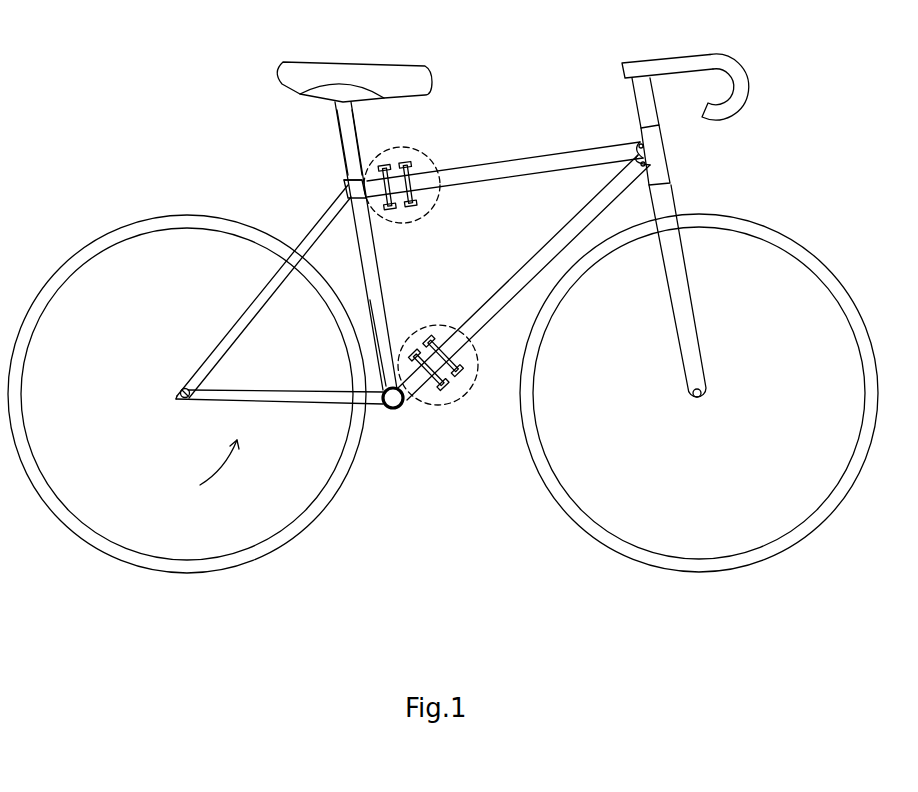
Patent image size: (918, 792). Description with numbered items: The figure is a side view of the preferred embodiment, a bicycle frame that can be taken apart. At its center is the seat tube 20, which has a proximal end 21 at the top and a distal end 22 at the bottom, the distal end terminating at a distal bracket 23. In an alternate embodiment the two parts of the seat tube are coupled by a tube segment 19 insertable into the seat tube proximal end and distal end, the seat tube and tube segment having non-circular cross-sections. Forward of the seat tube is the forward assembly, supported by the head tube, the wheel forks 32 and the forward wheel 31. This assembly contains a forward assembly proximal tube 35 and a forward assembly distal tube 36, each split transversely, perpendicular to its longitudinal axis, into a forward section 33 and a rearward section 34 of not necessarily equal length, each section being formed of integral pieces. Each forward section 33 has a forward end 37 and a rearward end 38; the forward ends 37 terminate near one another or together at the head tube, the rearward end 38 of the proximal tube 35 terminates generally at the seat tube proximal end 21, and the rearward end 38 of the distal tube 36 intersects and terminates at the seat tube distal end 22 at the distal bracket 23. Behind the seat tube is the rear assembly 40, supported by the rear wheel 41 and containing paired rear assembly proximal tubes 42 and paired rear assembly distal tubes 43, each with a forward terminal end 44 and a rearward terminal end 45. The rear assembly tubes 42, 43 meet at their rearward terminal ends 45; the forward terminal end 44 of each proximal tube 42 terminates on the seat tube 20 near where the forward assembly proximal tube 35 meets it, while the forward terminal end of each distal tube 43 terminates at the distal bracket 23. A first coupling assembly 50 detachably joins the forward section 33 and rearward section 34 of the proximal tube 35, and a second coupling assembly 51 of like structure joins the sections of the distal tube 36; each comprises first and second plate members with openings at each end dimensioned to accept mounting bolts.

The tube segment 19 is at (338, 142).
The seat tube 20 is at (377, 296).
The seat tube proximal end 21 is at (345, 181).
The seat tube distal end 22 is at (385, 364).
The distal bracket 23 is at (398, 412).
The forward wheel 31 is at (820, 243).
The wheel forks 32 is at (688, 285).
The forward section 33 is at (608, 148).
The rearward section 34 is at (365, 188).
The forward assembly proximal tube 35 is at (512, 170).
The forward assembly distal tube 36 is at (547, 250).
The forward end 37 is at (640, 170).
The rearward end 38 is at (425, 153).
The rear assembly 40 is at (203, 471).
The rear wheel 41 is at (258, 557).
The rear assembly proximal tube 42 is at (237, 323).
The rear assembly distal tube 43 is at (268, 401).
The forward terminal end 44 is at (343, 204).
The rearward terminal end 45 is at (184, 390).
The first coupling assembly 50 is at (430, 160).
The second coupling assembly 51 is at (465, 397).